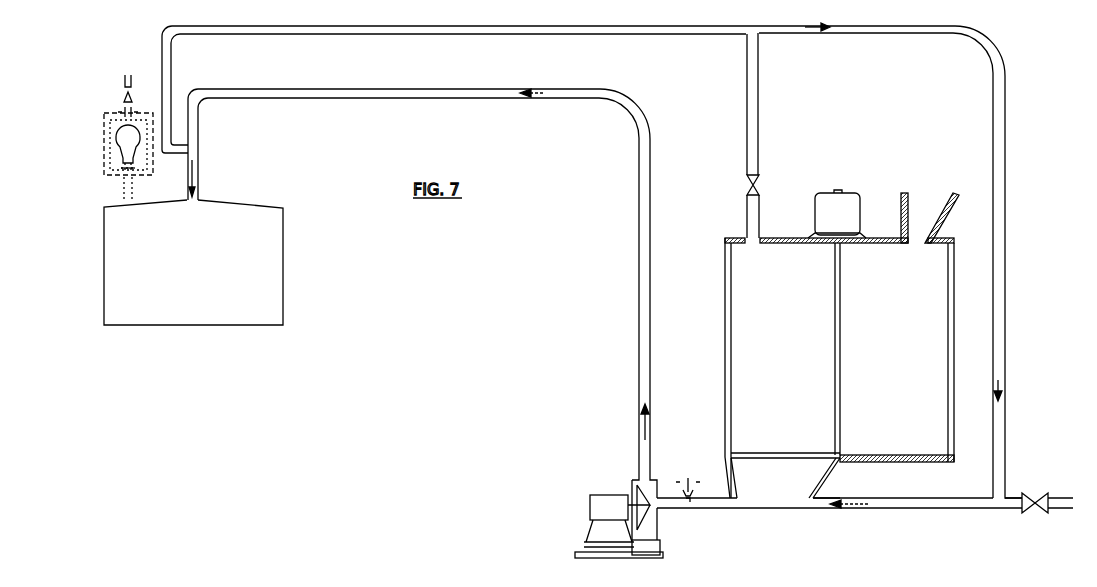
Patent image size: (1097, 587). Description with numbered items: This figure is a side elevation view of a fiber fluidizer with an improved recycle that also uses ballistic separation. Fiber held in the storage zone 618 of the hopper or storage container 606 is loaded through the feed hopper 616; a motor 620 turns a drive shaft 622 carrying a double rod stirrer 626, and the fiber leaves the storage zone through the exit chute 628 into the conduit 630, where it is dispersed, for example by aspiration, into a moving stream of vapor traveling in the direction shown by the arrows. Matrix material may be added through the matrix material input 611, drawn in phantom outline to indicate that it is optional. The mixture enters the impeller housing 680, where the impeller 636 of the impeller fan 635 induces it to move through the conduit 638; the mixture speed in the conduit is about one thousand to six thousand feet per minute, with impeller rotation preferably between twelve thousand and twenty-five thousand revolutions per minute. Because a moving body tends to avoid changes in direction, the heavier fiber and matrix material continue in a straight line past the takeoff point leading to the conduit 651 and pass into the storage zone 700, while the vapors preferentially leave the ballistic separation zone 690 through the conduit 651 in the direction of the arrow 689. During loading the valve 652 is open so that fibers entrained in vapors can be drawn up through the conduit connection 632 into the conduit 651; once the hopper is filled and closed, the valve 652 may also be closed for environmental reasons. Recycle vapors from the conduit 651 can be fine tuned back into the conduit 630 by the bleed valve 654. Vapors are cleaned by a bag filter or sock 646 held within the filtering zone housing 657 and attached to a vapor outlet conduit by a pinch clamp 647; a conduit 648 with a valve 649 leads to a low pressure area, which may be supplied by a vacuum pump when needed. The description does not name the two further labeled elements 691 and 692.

The hopper or storage container 606 is at (811, 328).
The matrix material input 611 is at (680, 448).
The feed hopper 616 is at (939, 211).
The storage zone 618 is at (905, 355).
The motor 620 is at (840, 191).
The drive shaft 622 is at (833, 292).
The double rod stirrer 626 is at (772, 430).
The exit chute 628 is at (789, 486).
The conduit 630 is at (893, 512).
The conduit connection 632 is at (746, 214).
The impeller fan 635 is at (645, 522).
The impeller 636 is at (590, 500).
The conduit 638 is at (639, 312).
The bag filter or sock 646 is at (110, 131).
The pinch clamp 647 is at (114, 176).
The conduit 648 is at (118, 110).
The valve 649 is at (124, 96).
The conduit 651 is at (508, 63).
The valve 652 is at (745, 186).
The bleed valve 654 is at (1042, 527).
The filtering zone housing 657 is at (100, 141).
The impeller housing 680 is at (632, 485).
The arrow 689 is at (800, 36).
The ballistic separation zone 690 is at (422, 278).
The discharge channel 691 is at (186, 181).
The conduit 692 is at (200, 165).
The storage zone 700 is at (205, 273).